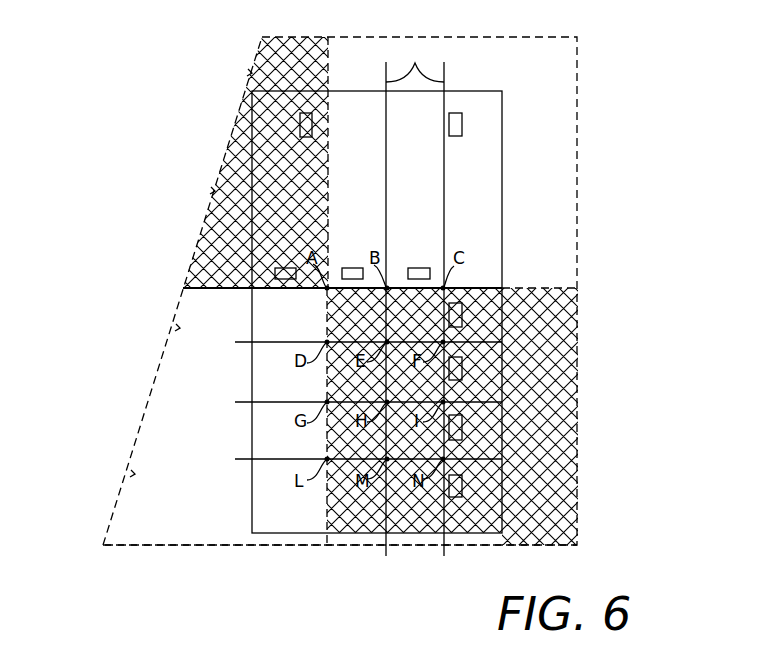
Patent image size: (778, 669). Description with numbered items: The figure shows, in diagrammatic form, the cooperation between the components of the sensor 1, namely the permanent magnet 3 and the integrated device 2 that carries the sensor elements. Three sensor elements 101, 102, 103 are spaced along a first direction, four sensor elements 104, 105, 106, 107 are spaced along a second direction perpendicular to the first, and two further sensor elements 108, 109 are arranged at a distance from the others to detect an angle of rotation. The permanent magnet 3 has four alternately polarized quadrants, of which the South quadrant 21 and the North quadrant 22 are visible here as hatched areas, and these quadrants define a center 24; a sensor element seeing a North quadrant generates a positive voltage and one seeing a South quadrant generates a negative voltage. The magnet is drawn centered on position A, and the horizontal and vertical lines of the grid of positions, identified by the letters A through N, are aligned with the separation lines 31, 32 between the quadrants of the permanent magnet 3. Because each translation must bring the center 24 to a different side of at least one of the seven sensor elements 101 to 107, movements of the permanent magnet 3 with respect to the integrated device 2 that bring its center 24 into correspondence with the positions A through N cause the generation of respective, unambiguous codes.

The fluid flow measuring device 1 is at (93, 440).
The integrated device 2 is at (503, 118).
The permanent magnet 3 is at (549, 36).
The quadrant 21 is at (164, 409).
The quadrant 22 is at (238, 178).
The center 24 is at (325, 291).
The separation line 31 is at (415, 298).
The separation line 32 is at (512, 340).
The sensor element 101 is at (283, 267).
The sensor element 102 is at (351, 267).
The sensor element 103 is at (417, 267).
The sensor element 104 is at (458, 315).
The sensor element 105 is at (458, 369).
The sensor element 106 is at (458, 428).
The sensor element 107 is at (458, 486).
The sensor element 108 is at (306, 112).
The sensor element 109 is at (455, 112).